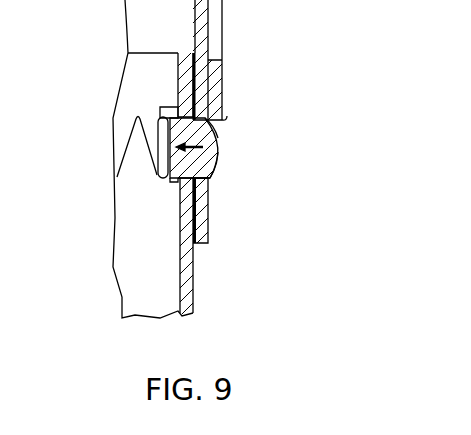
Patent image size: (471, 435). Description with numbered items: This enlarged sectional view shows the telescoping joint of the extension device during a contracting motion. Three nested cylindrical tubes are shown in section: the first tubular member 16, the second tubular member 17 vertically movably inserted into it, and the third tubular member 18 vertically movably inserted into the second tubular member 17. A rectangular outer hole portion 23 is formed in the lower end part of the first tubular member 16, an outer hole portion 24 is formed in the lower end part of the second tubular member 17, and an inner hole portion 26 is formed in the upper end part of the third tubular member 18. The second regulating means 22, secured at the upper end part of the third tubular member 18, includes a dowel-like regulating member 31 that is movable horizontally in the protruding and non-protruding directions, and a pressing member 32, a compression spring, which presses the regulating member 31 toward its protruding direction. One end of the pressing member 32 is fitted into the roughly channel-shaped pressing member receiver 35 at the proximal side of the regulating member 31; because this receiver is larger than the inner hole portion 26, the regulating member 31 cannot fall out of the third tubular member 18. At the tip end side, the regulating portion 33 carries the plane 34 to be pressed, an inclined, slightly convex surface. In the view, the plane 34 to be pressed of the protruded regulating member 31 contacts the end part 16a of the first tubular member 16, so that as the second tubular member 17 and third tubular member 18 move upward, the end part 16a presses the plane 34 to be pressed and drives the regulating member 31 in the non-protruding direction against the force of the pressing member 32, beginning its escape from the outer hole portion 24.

The first tubular member 16 is at (225, 88).
The end part 16a is at (224, 122).
The second tubular member 17 is at (212, 228).
The third tubular member 18 is at (194, 319).
The second regulating means 22 is at (133, 108).
The outer hole portion 23 is at (213, 32).
The outer hole portion 24 is at (214, 126).
The inner hole portion 26 is at (165, 107).
The regulating member 31 is at (219, 180).
The pressing member 32 is at (148, 142).
The regulating portion 33 is at (220, 163).
The plane to be pressed 34 is at (218, 146).
The pressing member receiver 35 is at (163, 178).